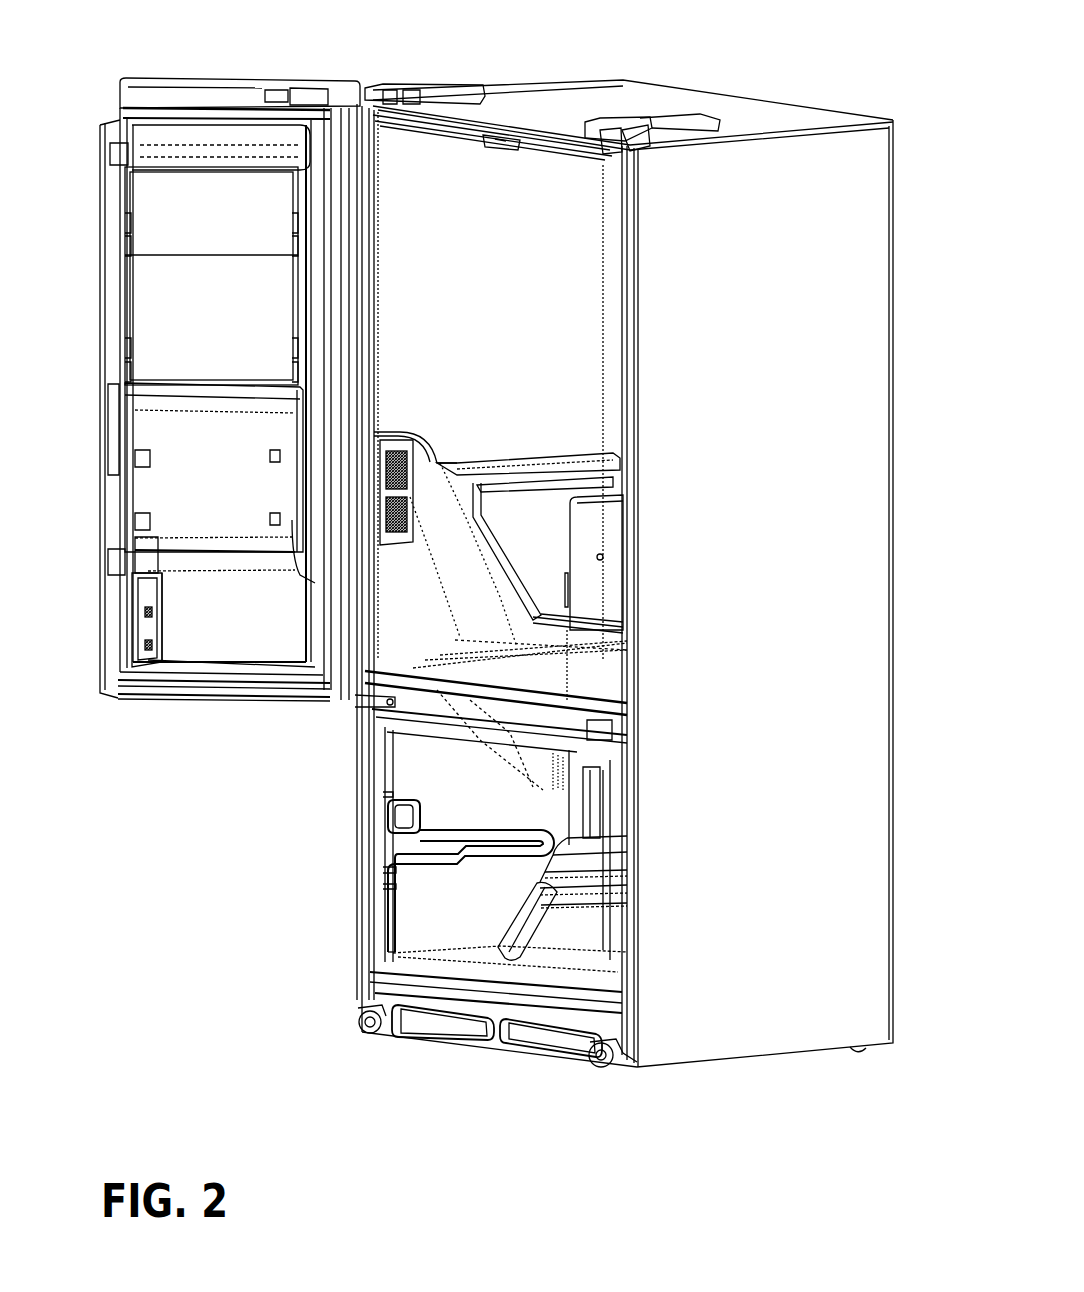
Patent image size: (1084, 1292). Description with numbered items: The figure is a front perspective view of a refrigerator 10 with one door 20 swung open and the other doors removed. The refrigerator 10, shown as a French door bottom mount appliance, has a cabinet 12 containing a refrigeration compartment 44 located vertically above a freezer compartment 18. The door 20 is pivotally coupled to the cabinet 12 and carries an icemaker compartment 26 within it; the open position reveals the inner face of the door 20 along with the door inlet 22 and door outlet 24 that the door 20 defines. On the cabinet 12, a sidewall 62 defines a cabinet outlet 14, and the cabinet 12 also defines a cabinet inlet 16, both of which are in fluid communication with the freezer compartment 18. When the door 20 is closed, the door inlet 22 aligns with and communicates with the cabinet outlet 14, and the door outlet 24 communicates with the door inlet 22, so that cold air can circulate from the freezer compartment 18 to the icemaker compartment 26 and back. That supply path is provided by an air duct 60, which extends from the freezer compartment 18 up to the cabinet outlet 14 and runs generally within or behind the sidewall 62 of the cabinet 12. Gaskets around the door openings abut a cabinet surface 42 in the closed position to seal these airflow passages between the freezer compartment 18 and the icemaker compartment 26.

The refrigerator 10 is at (851, 79).
The cabinet 12 is at (864, 294).
The cabinet outlet 14 is at (405, 469).
The cabinet inlet 16 is at (387, 530).
The freezer compartment 18 is at (437, 908).
The door 20 is at (106, 177).
The door inlet 22 is at (307, 485).
The door outlet 24 is at (295, 520).
The icemaker compartment 26 is at (158, 302).
The cabinet surface 42 is at (408, 492).
The refrigeration compartment 44 is at (533, 192).
The air duct 60 is at (463, 582).
The sidewall 62 is at (523, 318).